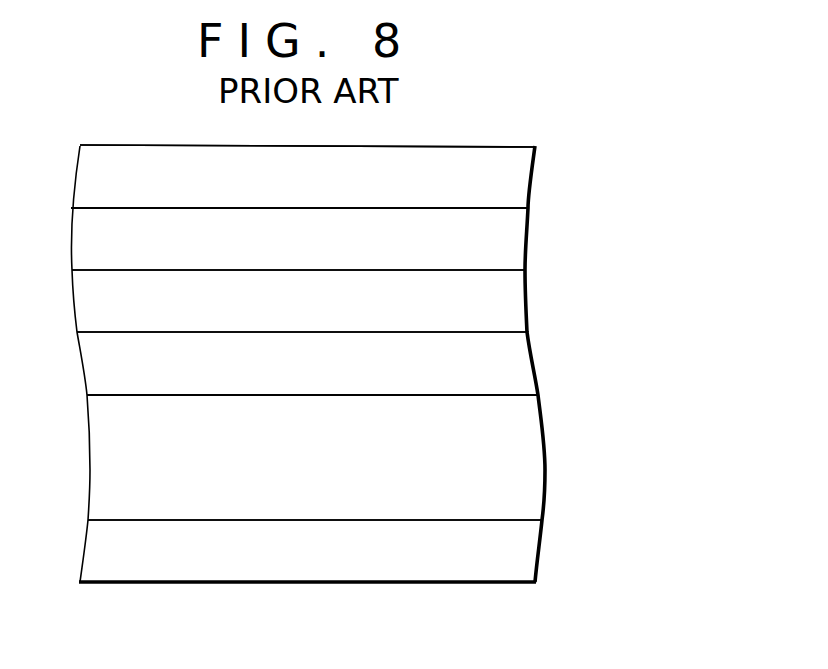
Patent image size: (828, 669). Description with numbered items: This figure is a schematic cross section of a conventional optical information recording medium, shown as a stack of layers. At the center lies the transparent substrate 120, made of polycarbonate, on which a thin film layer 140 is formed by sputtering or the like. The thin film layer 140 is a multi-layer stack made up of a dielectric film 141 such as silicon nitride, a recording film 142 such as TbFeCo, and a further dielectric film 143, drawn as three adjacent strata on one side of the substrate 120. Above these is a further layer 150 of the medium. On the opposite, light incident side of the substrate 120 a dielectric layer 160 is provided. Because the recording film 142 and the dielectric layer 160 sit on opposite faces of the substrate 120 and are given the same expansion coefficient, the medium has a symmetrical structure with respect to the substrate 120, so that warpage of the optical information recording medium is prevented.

The upper layer 150 is at (510, 183).
The dielectric film 141 is at (510, 245).
The recording film 142 is at (510, 308).
The dielectric film 143 is at (510, 370).
The thin film layer 140 is at (652, 228).
The substrate 120 is at (510, 435).
The dielectric layer 160 is at (510, 558).